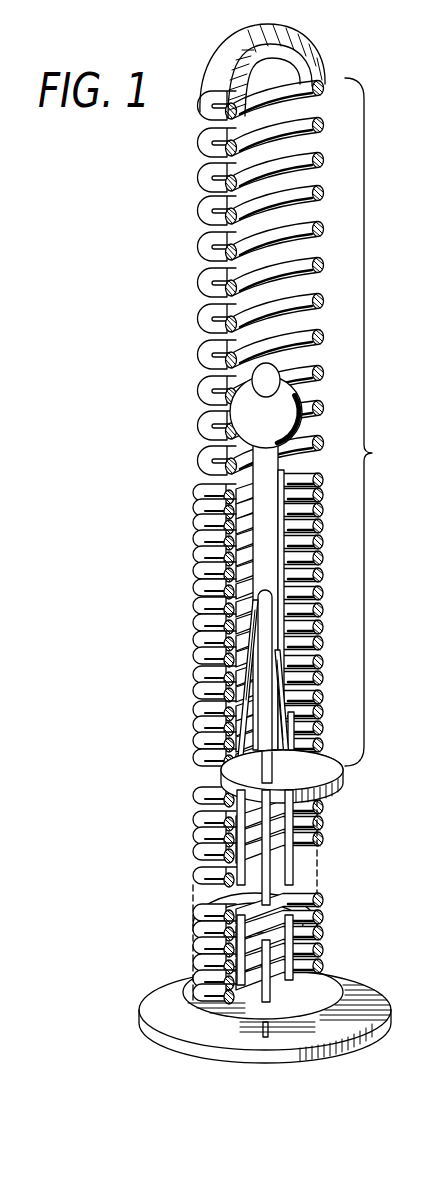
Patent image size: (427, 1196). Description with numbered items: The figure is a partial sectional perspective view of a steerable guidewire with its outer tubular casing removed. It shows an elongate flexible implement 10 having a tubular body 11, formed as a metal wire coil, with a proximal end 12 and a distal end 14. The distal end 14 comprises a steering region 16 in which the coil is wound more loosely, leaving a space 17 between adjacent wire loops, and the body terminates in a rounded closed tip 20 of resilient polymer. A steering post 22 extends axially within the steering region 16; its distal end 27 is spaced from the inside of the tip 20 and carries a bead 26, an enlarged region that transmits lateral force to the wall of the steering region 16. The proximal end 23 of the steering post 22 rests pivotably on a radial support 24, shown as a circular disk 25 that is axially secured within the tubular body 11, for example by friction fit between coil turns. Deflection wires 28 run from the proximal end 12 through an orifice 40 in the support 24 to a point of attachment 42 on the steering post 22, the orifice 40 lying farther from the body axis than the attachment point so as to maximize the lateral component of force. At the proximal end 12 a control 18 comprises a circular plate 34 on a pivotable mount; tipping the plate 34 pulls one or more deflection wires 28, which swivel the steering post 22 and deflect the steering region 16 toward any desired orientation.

The elongate flexible implement 10 is at (168, 883).
The tubular body 11 is at (193, 823).
The proximal end 12 is at (152, 972).
The distal end 14 is at (166, 312).
The steering region 16 is at (372, 422).
The space between adjacent wire loops 17 is at (205, 445).
The control 18 is at (201, 1063).
The closed tip 20 is at (283, 30).
The steering post 22 is at (283, 690).
The proximal end of the steering post 23 is at (291, 741).
The radial support 24 is at (350, 781).
The circular disk 25 is at (330, 763).
The bead 26 is at (240, 463).
The distal end of the steering post 27 is at (252, 378).
The deflection wires 28 is at (243, 673).
The circular plate 34 is at (285, 1063).
The orifice 40 is at (328, 797).
The point of attachment 42 is at (200, 593).